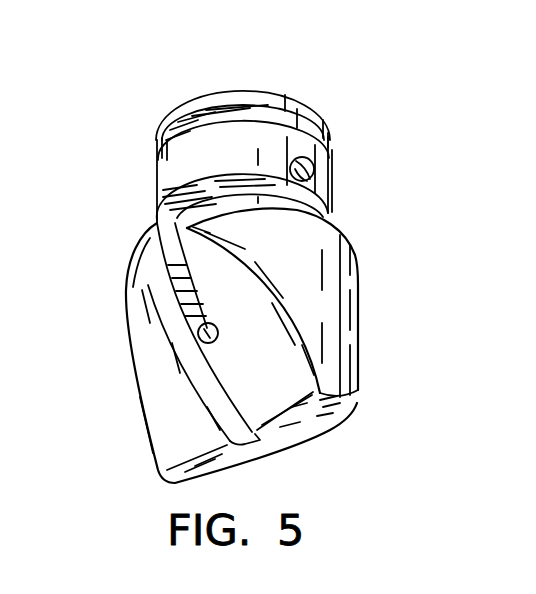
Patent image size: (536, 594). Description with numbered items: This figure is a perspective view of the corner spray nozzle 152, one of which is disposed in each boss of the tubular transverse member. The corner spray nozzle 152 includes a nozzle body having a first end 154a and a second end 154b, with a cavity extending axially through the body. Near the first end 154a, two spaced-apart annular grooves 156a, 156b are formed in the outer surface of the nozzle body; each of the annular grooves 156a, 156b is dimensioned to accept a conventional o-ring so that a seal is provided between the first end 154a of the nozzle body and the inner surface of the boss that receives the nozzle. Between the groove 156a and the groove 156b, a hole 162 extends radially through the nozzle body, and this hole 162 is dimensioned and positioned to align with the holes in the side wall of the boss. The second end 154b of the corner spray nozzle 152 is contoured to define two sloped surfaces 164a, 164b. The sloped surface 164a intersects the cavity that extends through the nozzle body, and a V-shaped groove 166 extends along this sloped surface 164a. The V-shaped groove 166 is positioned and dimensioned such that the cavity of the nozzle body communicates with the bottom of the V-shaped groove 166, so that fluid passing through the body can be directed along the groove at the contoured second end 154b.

The corner spray nozzle 152 is at (138, 427).
The first end 154a is at (272, 92).
The second end 154b is at (324, 392).
The annular groove 156a is at (219, 124).
The annular groove 156b is at (227, 213).
The hole 162 is at (314, 174).
The sloped surface 164a is at (148, 378).
The sloped surface 164b is at (310, 423).
The V-shaped groove 166 is at (172, 267).